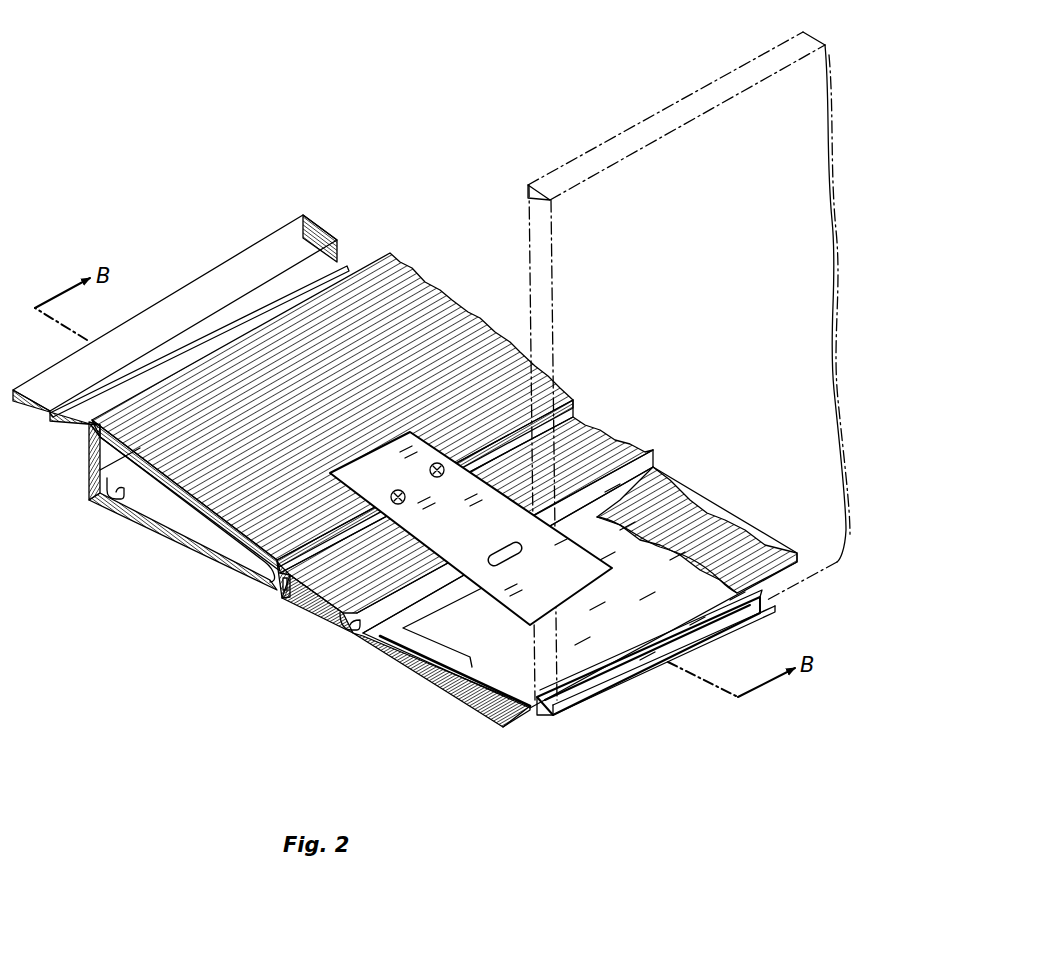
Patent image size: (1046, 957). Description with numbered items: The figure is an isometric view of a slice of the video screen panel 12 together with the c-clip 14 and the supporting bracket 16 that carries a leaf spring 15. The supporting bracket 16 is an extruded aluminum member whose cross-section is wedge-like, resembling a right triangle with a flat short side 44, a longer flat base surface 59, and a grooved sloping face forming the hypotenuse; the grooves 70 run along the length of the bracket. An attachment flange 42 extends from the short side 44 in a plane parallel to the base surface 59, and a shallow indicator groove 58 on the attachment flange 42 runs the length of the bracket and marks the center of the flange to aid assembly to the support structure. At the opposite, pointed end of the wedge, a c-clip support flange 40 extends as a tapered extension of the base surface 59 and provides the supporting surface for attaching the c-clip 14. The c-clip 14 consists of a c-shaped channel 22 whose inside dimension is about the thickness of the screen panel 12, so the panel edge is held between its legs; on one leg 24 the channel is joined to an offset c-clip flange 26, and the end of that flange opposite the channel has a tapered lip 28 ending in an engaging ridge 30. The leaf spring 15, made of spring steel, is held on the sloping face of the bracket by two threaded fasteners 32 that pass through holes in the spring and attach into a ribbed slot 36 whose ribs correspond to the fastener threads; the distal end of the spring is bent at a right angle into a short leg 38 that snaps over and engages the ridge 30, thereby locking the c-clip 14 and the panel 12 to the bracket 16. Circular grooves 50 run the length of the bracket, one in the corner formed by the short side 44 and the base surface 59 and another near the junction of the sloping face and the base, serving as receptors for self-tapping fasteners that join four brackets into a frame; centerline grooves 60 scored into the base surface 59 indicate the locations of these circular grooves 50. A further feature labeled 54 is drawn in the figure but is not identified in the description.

The video screen panel 12 is at (712, 82).
The c-clip 14 is at (640, 676).
The leaf spring 15 is at (497, 580).
The supporting bracket 16 is at (147, 536).
The c-shaped channel 22 is at (590, 690).
The leg of c-shaped channel 24 is at (535, 705).
The c-clip flange 26 is at (737, 526).
The tapered lip 28 is at (403, 630).
The engaging portion or ridge 30 is at (693, 573).
The threaded fasteners 32 is at (398, 490).
The ribbed slot 36 is at (283, 592).
The short leg 38 is at (530, 617).
The c-clip support flange 40 is at (707, 537).
The attachment flange 42 is at (245, 278).
The short side 44 is at (89, 447).
The circular grooves 50 is at (107, 487).
The channel interior 54 is at (190, 533).
The indicator groove 58 is at (300, 263).
The base surface 59 is at (467, 697).
The centerline grooves 60 is at (107, 497).
The grooves 70 is at (448, 300).